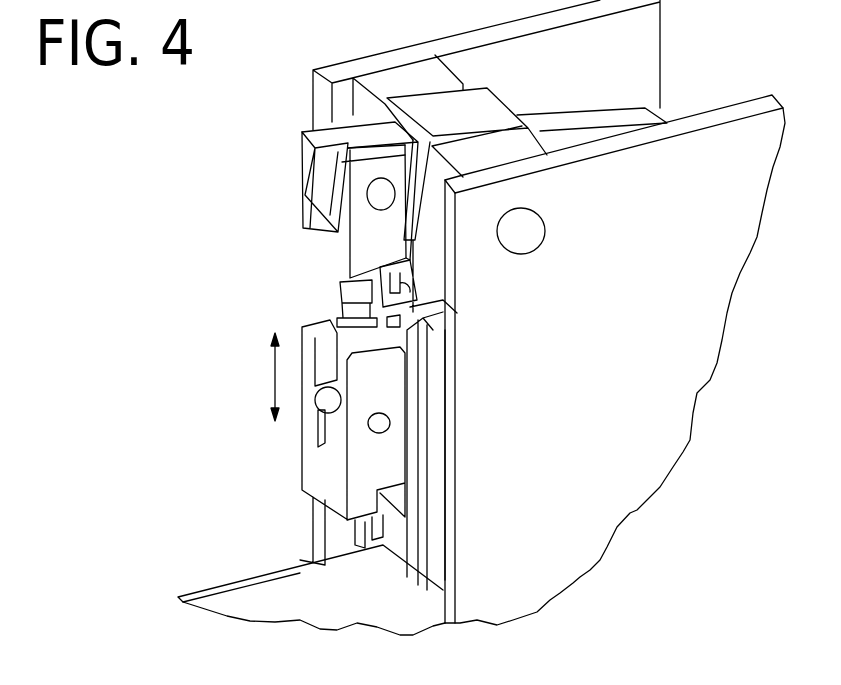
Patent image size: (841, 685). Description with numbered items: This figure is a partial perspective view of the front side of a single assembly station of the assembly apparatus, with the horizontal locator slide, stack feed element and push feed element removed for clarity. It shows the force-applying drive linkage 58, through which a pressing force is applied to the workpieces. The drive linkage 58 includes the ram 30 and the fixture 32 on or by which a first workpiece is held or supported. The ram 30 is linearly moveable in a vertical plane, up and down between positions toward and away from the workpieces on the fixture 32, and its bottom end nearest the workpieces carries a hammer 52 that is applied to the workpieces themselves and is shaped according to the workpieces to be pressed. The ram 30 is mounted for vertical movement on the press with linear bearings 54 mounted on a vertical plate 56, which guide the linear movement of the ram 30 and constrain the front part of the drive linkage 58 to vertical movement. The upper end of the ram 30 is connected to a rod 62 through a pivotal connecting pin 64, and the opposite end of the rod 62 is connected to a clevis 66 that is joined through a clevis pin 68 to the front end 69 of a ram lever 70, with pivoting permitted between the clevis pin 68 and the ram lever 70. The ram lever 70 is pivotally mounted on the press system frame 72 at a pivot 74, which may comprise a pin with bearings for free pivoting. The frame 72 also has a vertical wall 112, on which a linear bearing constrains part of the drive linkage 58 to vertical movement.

The ram 30 is at (322, 457).
The fixture 32 is at (337, 577).
The hammer 52 is at (352, 533).
The linear bearings 54 is at (437, 374).
The vertical plate 56 is at (437, 290).
The drive linkage 58 is at (312, 233).
The rod 62 is at (328, 402).
The connecting pin 64 is at (381, 420).
The clevis 66 is at (330, 250).
The clevis pin 68 is at (380, 197).
The front end of ram lever 69 is at (318, 180).
The ram lever 70 is at (486, 113).
The press system frame 72 is at (398, 78).
The pivot 74 is at (532, 246).
The vertical wall 112 is at (668, 309).